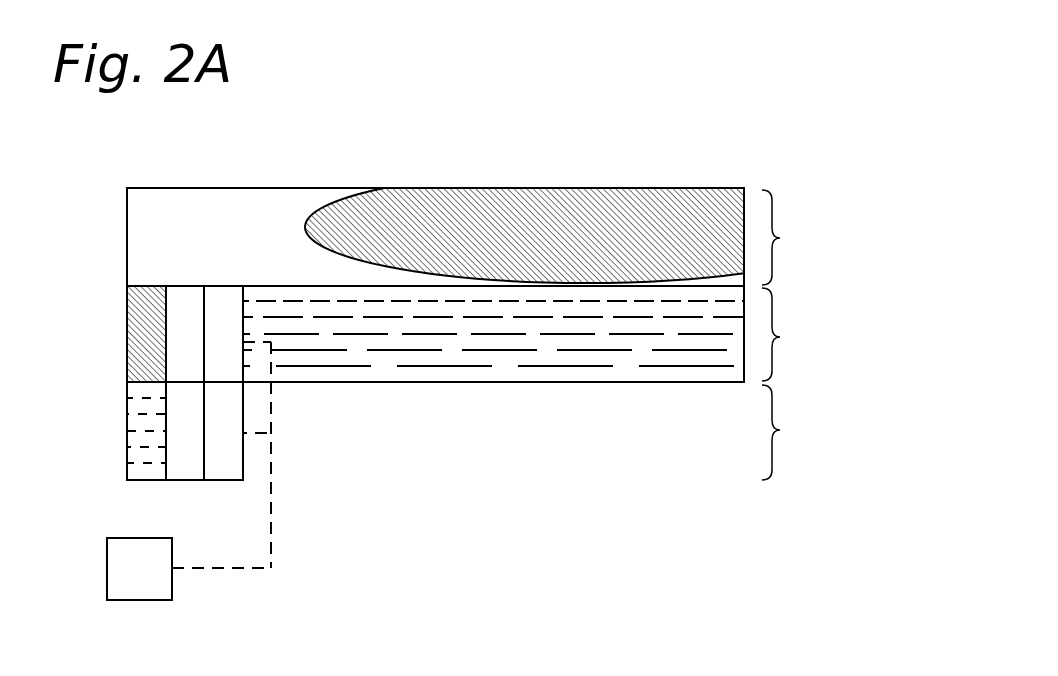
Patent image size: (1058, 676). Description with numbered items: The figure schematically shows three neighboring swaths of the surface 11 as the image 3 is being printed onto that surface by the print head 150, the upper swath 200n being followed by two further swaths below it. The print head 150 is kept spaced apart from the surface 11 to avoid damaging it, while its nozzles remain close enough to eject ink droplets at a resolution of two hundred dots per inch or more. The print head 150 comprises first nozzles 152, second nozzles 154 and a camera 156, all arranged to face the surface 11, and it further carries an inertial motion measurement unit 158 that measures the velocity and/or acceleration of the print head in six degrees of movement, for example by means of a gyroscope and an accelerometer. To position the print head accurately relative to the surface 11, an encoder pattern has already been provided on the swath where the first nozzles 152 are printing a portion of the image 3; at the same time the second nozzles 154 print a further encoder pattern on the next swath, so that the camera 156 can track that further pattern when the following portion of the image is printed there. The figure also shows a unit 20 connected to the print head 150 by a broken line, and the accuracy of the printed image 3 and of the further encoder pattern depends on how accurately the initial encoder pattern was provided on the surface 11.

The image 3 is at (235, 200).
The swath 200n is at (780, 238).
The surface 11 is at (477, 383).
The print head 150 is at (282, 415).
The first nozzles 152 is at (185, 334).
The second nozzles 154 is at (185, 431).
The camera 156 is at (223, 334).
The inertial motion measurement unit 158 is at (223, 431).
The control unit 20 is at (189, 569).